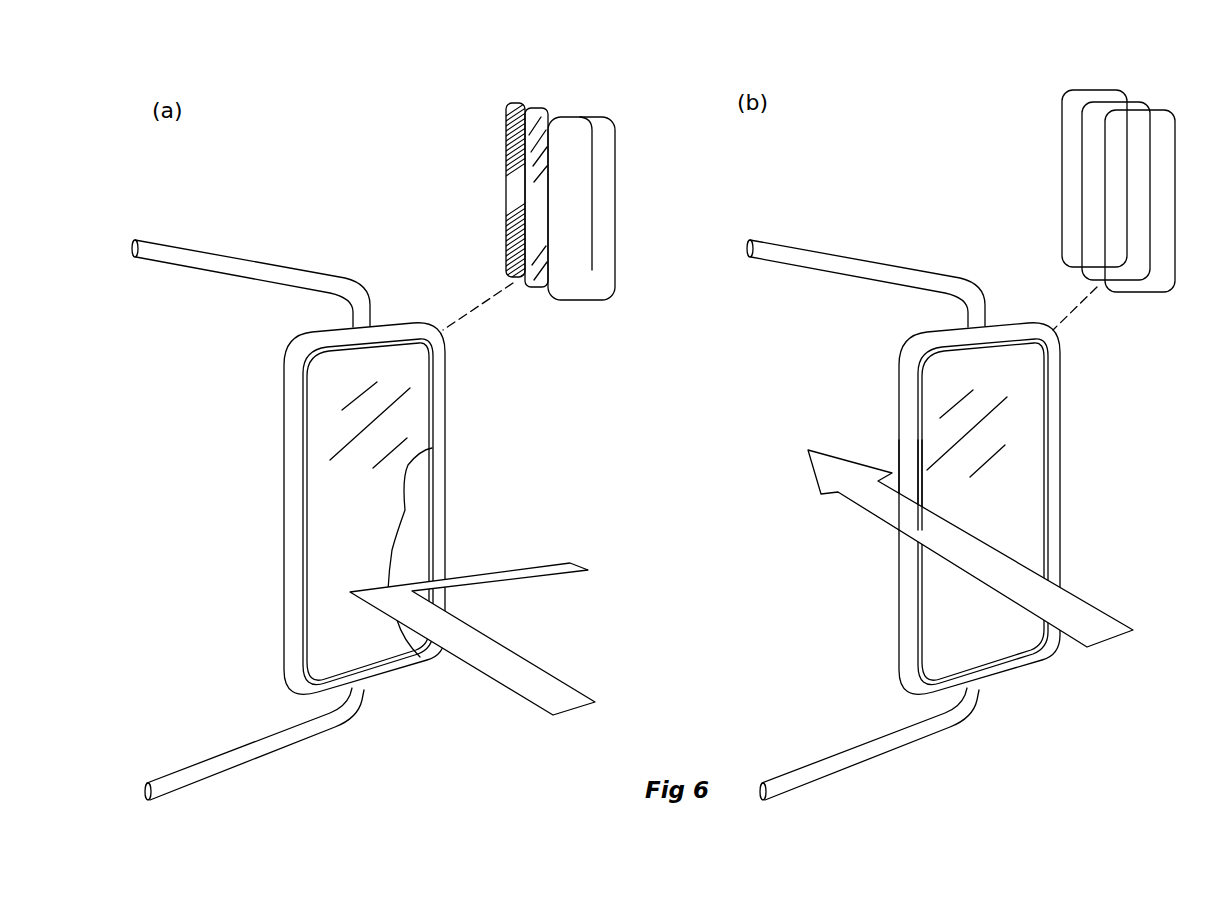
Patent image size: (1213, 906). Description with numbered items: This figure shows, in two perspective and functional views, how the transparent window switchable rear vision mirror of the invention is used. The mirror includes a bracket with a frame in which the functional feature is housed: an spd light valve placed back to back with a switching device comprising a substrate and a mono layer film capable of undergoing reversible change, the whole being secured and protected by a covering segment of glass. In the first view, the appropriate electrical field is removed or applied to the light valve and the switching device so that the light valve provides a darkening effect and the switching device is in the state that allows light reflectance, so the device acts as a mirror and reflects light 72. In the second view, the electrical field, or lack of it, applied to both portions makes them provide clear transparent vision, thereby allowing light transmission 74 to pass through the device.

The reflected light 72 is at (540, 570).
The light transmission 74 is at (1073, 612).